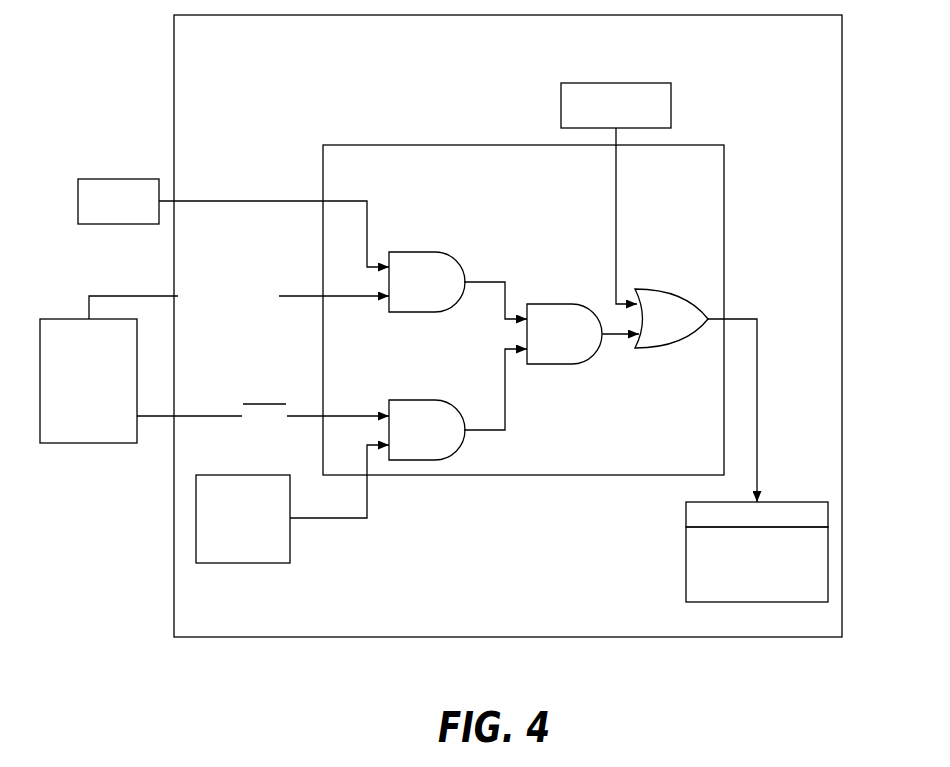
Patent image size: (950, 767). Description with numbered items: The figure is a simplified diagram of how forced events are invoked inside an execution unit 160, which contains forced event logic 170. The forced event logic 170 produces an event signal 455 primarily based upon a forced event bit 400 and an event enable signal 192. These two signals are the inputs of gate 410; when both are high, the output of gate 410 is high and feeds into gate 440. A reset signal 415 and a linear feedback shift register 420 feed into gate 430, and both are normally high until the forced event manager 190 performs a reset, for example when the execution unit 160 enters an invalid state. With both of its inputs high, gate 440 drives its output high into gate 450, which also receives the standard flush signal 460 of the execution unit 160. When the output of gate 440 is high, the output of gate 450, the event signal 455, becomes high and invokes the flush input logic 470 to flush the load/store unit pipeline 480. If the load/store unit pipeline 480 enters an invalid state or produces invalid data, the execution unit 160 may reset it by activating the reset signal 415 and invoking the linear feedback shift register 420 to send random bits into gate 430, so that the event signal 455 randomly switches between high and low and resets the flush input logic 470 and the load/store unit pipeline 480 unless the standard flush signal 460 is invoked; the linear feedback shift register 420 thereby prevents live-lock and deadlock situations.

The execution unit 160 is at (494, 66).
The forced event logic 170 is at (509, 195).
The forced event manager 190 is at (74, 424).
The event enable signal 192 is at (239, 314).
The forced event bit 400 is at (224, 209).
The gate 410 is at (458, 285).
The reset signal 415 is at (263, 431).
The linear feedback shift register 420 is at (292, 526).
The gate 430 is at (458, 404).
The gate 440 is at (583, 334).
The gate 450 is at (671, 318).
The event signal 455 is at (751, 396).
The standard flush signal 460 is at (655, 193).
The flush input logic 470 is at (727, 520).
The load/store unit pipeline 480 is at (726, 564).